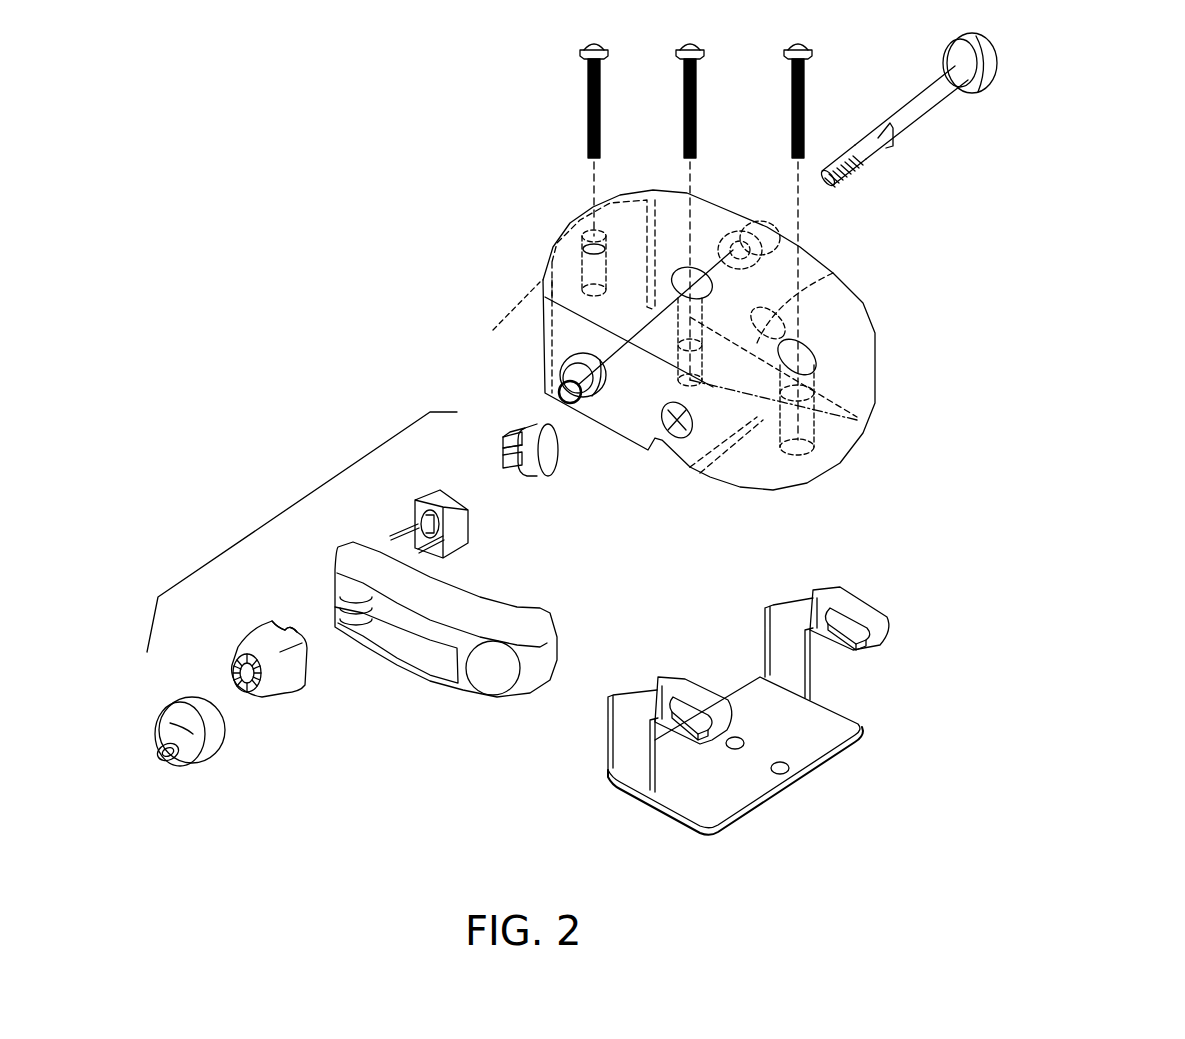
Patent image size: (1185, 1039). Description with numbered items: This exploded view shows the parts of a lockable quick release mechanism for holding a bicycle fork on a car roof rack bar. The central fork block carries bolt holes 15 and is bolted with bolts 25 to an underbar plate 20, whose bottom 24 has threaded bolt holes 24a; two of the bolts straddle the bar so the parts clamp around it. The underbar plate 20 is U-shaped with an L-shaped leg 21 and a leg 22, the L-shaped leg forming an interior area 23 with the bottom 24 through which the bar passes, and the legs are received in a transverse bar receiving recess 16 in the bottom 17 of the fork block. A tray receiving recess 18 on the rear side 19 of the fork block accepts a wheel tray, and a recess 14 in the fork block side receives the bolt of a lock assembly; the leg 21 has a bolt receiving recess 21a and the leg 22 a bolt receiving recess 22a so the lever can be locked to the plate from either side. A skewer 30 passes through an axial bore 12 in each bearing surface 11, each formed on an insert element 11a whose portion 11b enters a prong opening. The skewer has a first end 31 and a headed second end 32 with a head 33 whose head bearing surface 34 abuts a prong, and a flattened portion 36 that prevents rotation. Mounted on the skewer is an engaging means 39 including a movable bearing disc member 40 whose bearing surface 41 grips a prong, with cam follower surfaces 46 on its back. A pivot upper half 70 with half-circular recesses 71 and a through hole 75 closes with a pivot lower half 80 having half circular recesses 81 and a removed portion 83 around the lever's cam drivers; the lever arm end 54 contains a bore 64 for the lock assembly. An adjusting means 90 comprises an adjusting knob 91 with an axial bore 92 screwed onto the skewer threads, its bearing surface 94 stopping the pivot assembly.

The fork block bearing surface 11 is at (610, 394).
The insert element 11a is at (606, 367).
The portion of the insert element 11b is at (590, 383).
The axial bore 12 is at (600, 420).
The recess 14 is at (683, 370).
The bolt holes 15 is at (590, 252).
The transverse bar receiving recess 16 is at (670, 445).
The bottom of the fork block 17 is at (757, 485).
The tray receiving recess 18 is at (497, 330).
The rear side of the fork block 19 is at (545, 357).
The underbar plate 20 is at (777, 691).
The L-shaped leg 21 is at (663, 708).
The bolt receiving recess 21a is at (688, 700).
The leg 22 is at (830, 609).
The bolt receiving recess 22a is at (846, 618).
The interior area 23 is at (828, 665).
The bottom of the underbar plate 24 is at (735, 769).
The threaded bolt holes 24a is at (782, 775).
The bolts 25 is at (594, 42).
The skewer 30 is at (928, 137).
The first end of the skewer 31 is at (846, 180).
The second end of the skewer 32 is at (955, 40).
The head 33 is at (985, 60).
The head bearing surface 34 is at (968, 88).
The flattened portion 36 is at (882, 142).
The engaging means 39 is at (300, 500).
The movable bearing disc member 40 is at (529, 438).
The bearing surface 41 is at (558, 440).
The cam follower surfaces 46 is at (510, 430).
The end of the lever arm 54 is at (451, 644).
The bore 64 is at (495, 683).
The pivot upper half 70 is at (255, 665).
The half-circular recesses 71 is at (285, 633).
The through hole 75 is at (250, 692).
The pivot lower half 80 is at (438, 537).
The half circular recesses 81 is at (430, 545).
The removed portion 83 is at (405, 528).
The adjusting means 90 is at (226, 731).
The adjusting knob 91 is at (205, 758).
The axial bore 92 is at (168, 765).
The bearing surface of the knob 94 is at (205, 700).